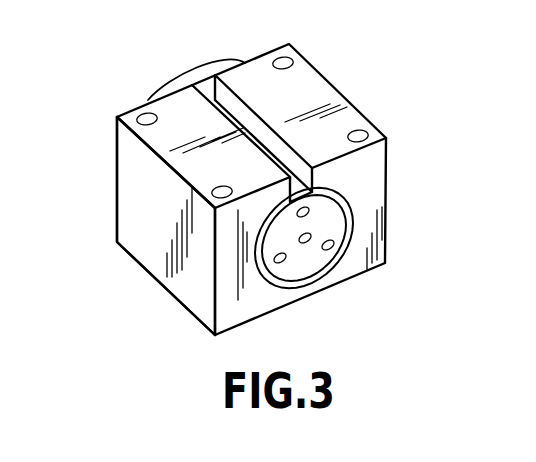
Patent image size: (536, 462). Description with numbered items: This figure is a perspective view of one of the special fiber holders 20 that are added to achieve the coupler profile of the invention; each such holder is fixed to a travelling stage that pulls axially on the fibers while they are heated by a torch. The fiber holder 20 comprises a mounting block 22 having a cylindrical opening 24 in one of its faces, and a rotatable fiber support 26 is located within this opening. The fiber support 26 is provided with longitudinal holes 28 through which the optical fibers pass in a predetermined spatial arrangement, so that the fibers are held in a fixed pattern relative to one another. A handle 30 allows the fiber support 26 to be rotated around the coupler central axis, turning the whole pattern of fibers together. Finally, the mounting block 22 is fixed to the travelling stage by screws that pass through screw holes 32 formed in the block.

The fiber holder 20 is at (352, 72).
The mounting block 22 is at (158, 265).
The cylindrical opening 24 is at (282, 286).
The rotatable fiber support 26 is at (330, 210).
The longitudinal holes 28 is at (330, 250).
The handle 30 is at (177, 78).
The screw holes 32 is at (137, 115).